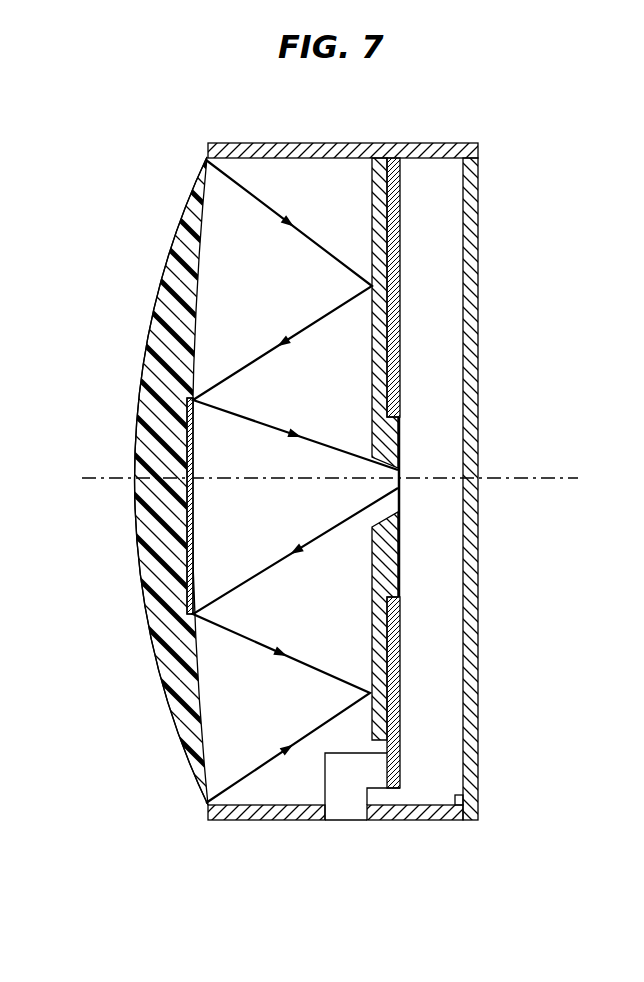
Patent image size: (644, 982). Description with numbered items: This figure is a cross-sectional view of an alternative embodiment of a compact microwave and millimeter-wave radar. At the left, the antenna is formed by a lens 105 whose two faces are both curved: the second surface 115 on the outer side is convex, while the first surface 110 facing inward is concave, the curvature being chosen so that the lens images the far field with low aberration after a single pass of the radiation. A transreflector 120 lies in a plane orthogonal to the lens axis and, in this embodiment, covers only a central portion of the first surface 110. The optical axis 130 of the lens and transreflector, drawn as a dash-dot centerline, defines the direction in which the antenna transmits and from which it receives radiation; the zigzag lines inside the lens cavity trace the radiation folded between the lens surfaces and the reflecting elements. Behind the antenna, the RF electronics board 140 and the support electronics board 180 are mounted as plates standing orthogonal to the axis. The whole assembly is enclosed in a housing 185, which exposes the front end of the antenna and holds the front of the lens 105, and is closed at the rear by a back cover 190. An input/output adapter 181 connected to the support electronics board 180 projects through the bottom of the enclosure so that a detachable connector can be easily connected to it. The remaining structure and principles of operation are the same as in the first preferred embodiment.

The lens 105 is at (143, 576).
The first surface 110 is at (205, 285).
The second surface 115 is at (137, 480).
The transreflector 120 is at (192, 440).
The optical axis 130 is at (540, 468).
The RF electronics board 140 is at (402, 565).
The support electronics board 180 is at (402, 248).
The input/output adapter 181 is at (343, 823).
The housing 185 is at (272, 143).
The back cover 190 is at (478, 760).